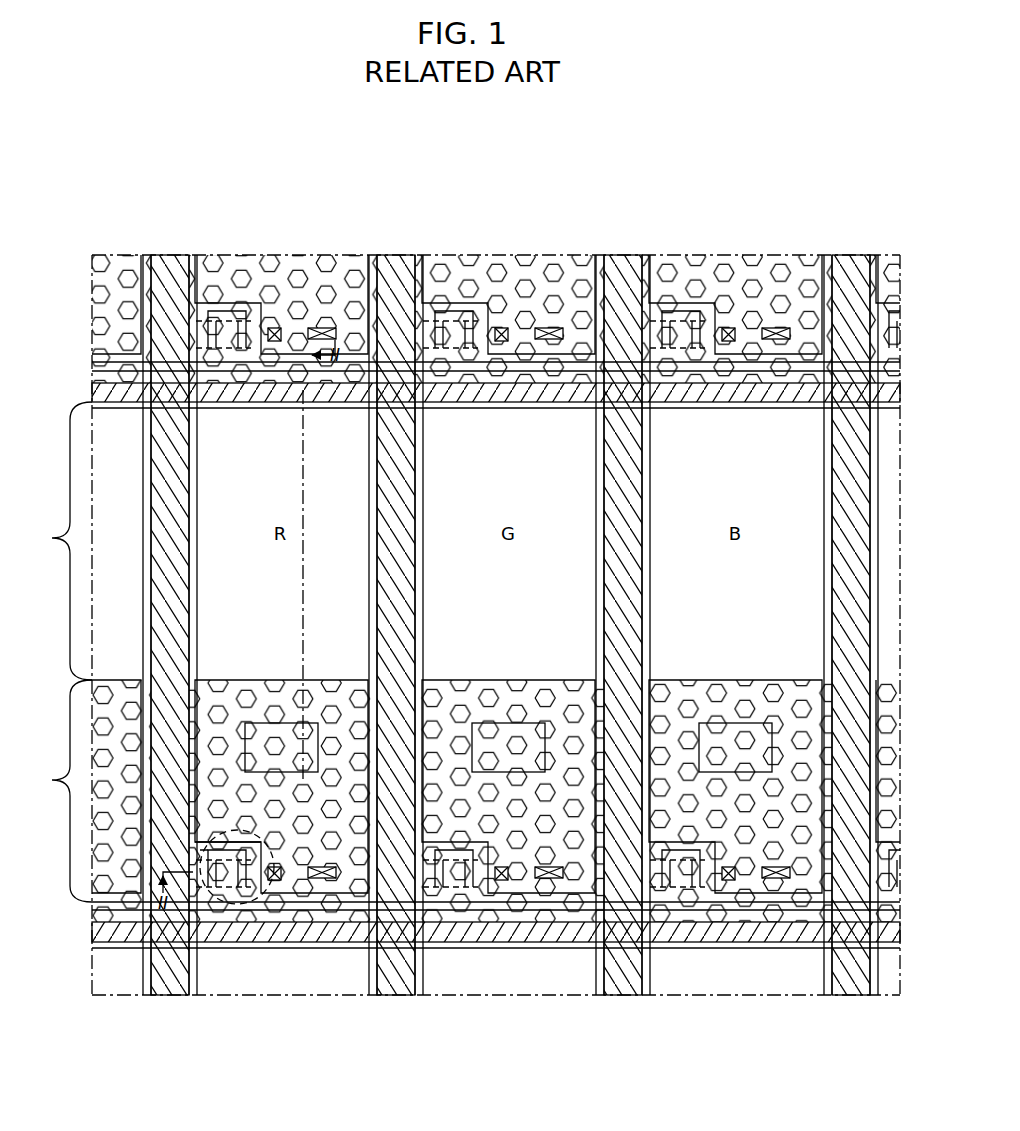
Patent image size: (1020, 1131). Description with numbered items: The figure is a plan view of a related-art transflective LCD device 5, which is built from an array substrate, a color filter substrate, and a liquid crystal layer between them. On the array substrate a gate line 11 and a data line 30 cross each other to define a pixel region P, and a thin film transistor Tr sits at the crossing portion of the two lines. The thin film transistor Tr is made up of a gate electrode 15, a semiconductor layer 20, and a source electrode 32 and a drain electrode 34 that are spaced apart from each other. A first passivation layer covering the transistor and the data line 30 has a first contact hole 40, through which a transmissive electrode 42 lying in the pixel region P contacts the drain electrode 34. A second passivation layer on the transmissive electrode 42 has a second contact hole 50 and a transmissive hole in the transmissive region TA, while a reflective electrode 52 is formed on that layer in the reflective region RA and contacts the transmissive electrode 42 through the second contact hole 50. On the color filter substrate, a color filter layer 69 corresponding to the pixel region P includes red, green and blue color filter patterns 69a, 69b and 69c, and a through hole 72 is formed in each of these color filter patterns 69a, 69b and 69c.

The transflective LCD device 5 is at (786, 222).
The gate line 11 is at (252, 905).
The gate electrode 15 is at (232, 866).
The semiconductor layer 20 is at (221, 884).
The data line 30 is at (152, 587).
The source electrode 32 is at (199, 850).
The drain electrode 34 is at (249, 852).
The first contact hole 40 is at (275, 886).
The transmissive electrode 42 is at (372, 528).
The second contact hole 50 is at (322, 883).
The reflective electrode 52 is at (245, 677).
The color filter layer 69 is at (582, 134).
The red color filter pattern 69a is at (320, 455).
The green color filter pattern 69b is at (522, 437).
The blue color filter pattern 69c is at (703, 420).
The through hole 72 is at (286, 716).
The pixel region P is at (334, 489).
The thin film transistor Tr is at (232, 908).
The transmissive region TA is at (56, 541).
The reflective region RA is at (56, 791).